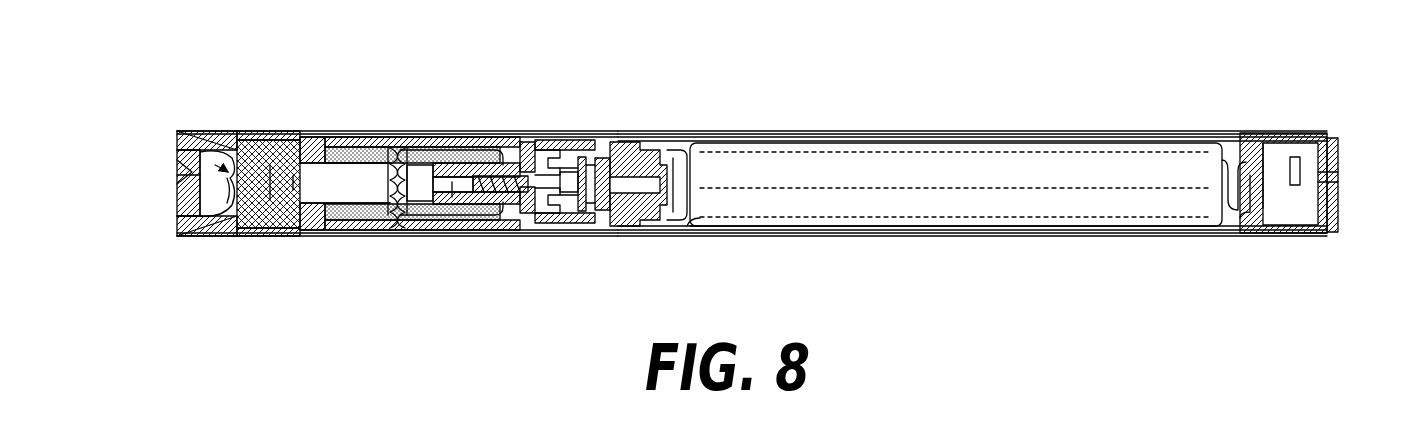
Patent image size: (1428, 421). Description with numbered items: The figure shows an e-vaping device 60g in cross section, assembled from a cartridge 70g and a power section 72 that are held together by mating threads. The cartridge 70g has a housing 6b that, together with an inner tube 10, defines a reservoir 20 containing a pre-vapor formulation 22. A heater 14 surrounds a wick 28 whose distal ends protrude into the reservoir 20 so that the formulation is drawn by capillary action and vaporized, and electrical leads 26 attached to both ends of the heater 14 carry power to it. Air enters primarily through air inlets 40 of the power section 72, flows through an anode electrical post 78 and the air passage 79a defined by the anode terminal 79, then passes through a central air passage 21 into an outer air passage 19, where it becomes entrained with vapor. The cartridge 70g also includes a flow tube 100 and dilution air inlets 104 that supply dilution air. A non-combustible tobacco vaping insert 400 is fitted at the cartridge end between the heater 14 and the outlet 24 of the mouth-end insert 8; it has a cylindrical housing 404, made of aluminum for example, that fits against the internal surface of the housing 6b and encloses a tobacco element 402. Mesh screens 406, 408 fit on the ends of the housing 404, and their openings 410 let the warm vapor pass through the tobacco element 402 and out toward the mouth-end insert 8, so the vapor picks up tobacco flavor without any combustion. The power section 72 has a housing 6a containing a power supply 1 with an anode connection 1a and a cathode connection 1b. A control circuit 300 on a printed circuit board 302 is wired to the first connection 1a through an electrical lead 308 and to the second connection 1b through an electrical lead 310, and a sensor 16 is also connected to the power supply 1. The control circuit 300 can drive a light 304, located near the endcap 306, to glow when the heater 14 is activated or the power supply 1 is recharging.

The power supply 1 is at (940, 158).
The anode connection 1a is at (670, 238).
The cathode connection 1b is at (1238, 218).
The housing 6a is at (1030, 135).
The housing 6b is at (235, 133).
The mouth-end insert 8 is at (200, 133).
The inner tube 10 is at (298, 236).
The heater 14 is at (330, 236).
The sensor 16 is at (1280, 152).
The outer air passage 19 is at (380, 181).
The reservoir 20 is at (345, 150).
The central air passage 21 is at (452, 197).
The pre-vapor formulation 22 is at (360, 140).
The outlet 24 is at (188, 205).
The electrical leads 26 is at (465, 140).
The wick 28 is at (395, 148).
The air inlets 40 is at (626, 236).
The e-vaping device 60g is at (674, 63).
The cartridge 70g is at (414, 113).
The power section 72 is at (868, 122).
The anode electrical post 78 is at (606, 140).
The anode terminal 79 is at (577, 140).
The air passage 79a is at (527, 205).
The flow tube 100 is at (522, 160).
The dilution air inlets 104 is at (312, 135).
The control circuit 300 is at (1250, 140).
The printed circuit board 302 is at (1300, 170).
The light 304 is at (1335, 182).
The endcap 306 is at (1340, 138).
The electrical lead 308 is at (687, 127).
The electrical lead 310 is at (733, 236).
The insert 400 is at (192, 142).
The tobacco element 402 is at (267, 197).
The cylindrical housing 404 is at (265, 140).
The mesh screen 406 is at (293, 190).
The mesh screen 408 is at (227, 203).
The openings 410 is at (215, 166).